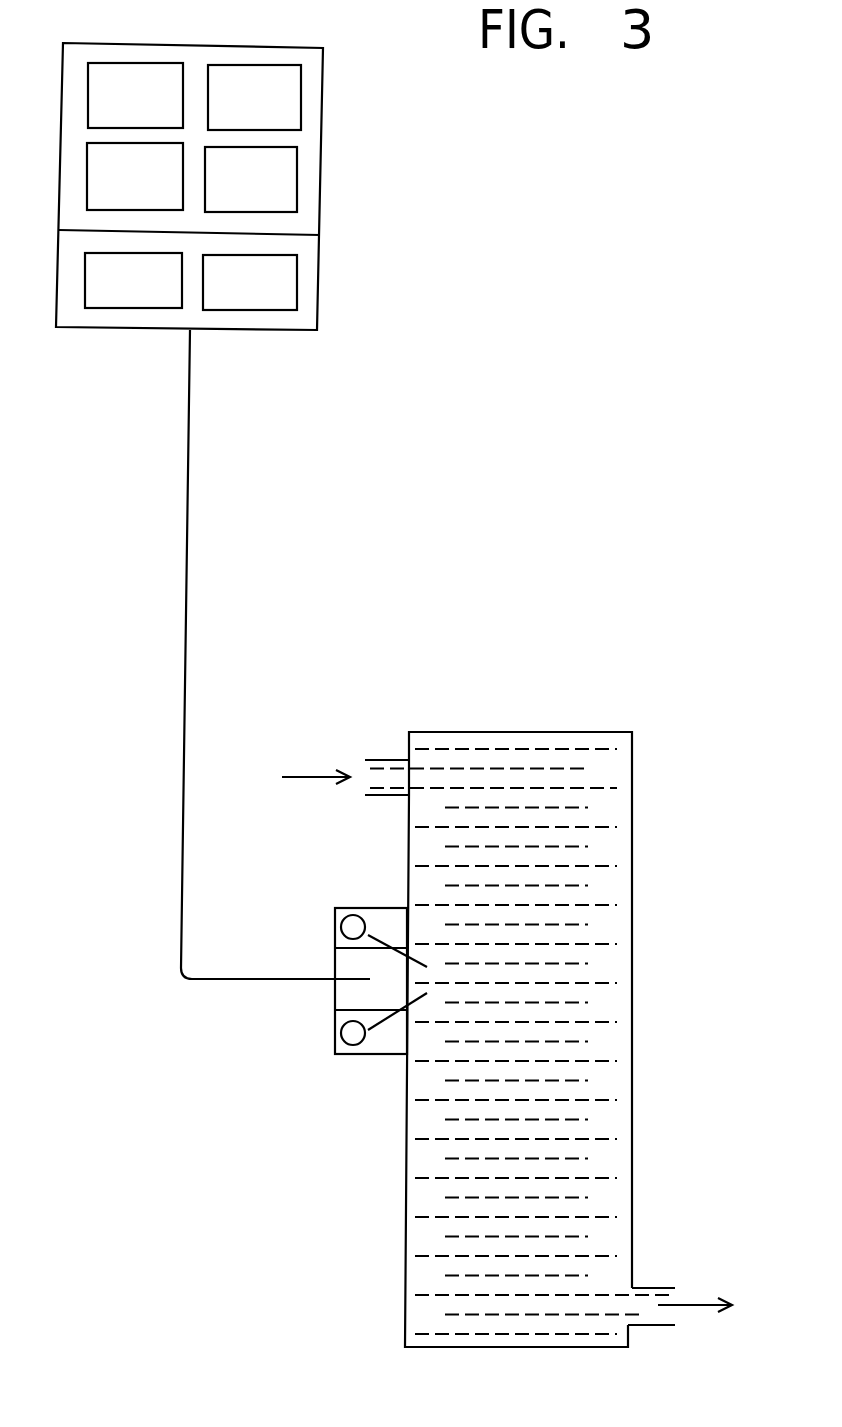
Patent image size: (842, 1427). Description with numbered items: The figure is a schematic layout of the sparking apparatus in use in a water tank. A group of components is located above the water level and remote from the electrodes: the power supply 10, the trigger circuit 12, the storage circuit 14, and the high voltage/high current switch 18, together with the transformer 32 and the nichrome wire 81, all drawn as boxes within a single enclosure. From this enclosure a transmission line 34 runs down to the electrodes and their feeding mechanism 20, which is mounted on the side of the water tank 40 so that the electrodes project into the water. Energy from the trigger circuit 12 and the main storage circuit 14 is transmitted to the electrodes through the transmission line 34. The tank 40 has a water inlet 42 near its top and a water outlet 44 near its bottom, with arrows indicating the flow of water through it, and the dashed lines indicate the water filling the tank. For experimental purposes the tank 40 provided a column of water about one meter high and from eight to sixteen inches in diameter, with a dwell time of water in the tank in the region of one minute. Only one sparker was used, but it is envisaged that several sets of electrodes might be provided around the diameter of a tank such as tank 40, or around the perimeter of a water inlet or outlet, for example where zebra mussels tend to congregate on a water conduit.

The power supply 10 is at (135, 95).
The trigger circuit 12 is at (254, 97).
The storage circuit 14 is at (135, 176).
The high voltage/high current switch 18 is at (251, 179).
The transformer 32 is at (133, 280).
The nichrome wire 81 is at (250, 282).
The transmission line 34 is at (184, 677).
The water tank 40 is at (520, 732).
The water inlet 42 is at (385, 760).
The water outlet 44 is at (652, 1288).
The feeding mechanism 20 is at (377, 1048).